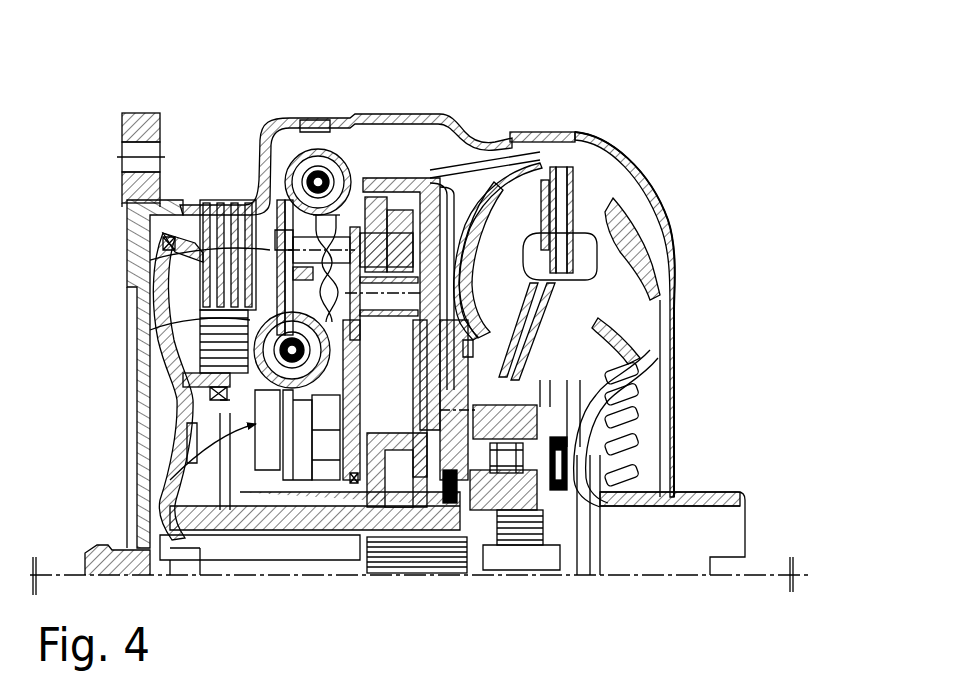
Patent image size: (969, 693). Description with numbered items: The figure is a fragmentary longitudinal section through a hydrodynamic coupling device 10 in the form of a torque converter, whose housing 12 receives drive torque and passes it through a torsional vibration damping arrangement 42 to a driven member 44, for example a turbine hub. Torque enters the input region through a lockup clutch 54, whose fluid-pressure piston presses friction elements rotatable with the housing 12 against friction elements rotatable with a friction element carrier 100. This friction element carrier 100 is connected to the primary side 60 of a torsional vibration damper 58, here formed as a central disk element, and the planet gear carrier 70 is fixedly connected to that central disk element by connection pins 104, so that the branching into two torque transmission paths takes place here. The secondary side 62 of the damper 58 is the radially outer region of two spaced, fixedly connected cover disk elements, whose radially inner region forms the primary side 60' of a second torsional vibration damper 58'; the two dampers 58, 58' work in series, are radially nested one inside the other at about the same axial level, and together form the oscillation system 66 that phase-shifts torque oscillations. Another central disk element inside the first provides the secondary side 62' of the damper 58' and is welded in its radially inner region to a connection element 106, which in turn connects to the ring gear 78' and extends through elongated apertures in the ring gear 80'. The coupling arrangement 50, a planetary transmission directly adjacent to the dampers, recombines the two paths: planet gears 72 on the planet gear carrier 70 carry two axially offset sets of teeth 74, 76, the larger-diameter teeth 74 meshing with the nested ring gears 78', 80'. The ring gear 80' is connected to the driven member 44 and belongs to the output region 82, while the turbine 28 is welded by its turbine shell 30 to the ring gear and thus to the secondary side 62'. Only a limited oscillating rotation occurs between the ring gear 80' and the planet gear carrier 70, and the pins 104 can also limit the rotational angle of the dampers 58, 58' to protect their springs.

The hydrodynamic coupling device 10 is at (693, 120).
The housing 12 is at (415, 195).
The turbine 28 is at (574, 136).
The turbine shell 30 is at (435, 428).
The torsional vibration damping arrangement 42 is at (384, 155).
The driven member 44 is at (342, 522).
The coupling arrangement 50 is at (403, 470).
The lockup clutch 54 is at (178, 212).
The torsional vibration damper 58 is at (309, 112).
The second torsional vibration damper 58' is at (187, 413).
The primary side 60 is at (283, 198).
The primary side 60' is at (181, 430).
The secondary side 62 is at (367, 191).
The secondary side 62' is at (265, 522).
The oscillation system 66 is at (306, 115).
The planet gear carrier 70 is at (283, 222).
The planet gears 72 is at (470, 332).
The teeth 74 is at (455, 182).
The teeth 76 is at (478, 210).
The ring gear 78' is at (467, 177).
The ring gear 80' is at (607, 289).
The output region 82 is at (440, 417).
The friction element carrier 100 is at (265, 287).
The connection pins 104 is at (292, 253).
The connection element 106 is at (352, 507).